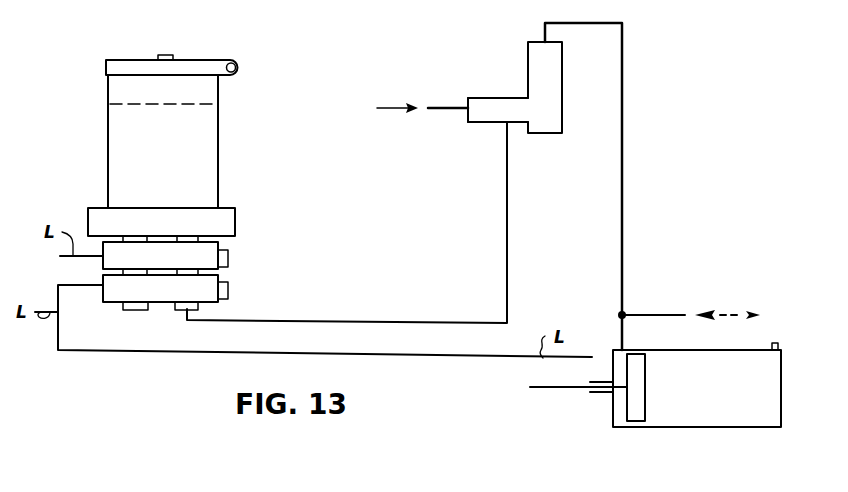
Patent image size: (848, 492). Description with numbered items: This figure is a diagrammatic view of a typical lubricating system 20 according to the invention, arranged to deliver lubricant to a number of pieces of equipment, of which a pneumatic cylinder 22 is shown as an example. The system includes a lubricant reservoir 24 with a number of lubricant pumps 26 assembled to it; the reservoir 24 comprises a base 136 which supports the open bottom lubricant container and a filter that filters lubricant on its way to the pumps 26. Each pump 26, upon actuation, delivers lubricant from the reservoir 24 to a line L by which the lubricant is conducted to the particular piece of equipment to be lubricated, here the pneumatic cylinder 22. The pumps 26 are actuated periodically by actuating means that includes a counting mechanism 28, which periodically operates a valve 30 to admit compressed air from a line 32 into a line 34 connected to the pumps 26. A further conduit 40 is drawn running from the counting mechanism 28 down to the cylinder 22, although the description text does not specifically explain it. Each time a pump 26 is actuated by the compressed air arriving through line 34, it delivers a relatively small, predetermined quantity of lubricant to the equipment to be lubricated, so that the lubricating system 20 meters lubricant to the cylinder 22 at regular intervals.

The lubricating system 20 is at (652, 91).
The pneumatic cylinder 22 is at (612, 409).
The lubricant reservoir 24 is at (218, 166).
The lubricant pumps 26 is at (218, 245).
The counting mechanism 28 is at (557, 80).
The valve 30 is at (485, 123).
The line 32 is at (455, 106).
The line 34 is at (505, 237).
The conduit 40 is at (624, 162).
The base 136 is at (235, 213).